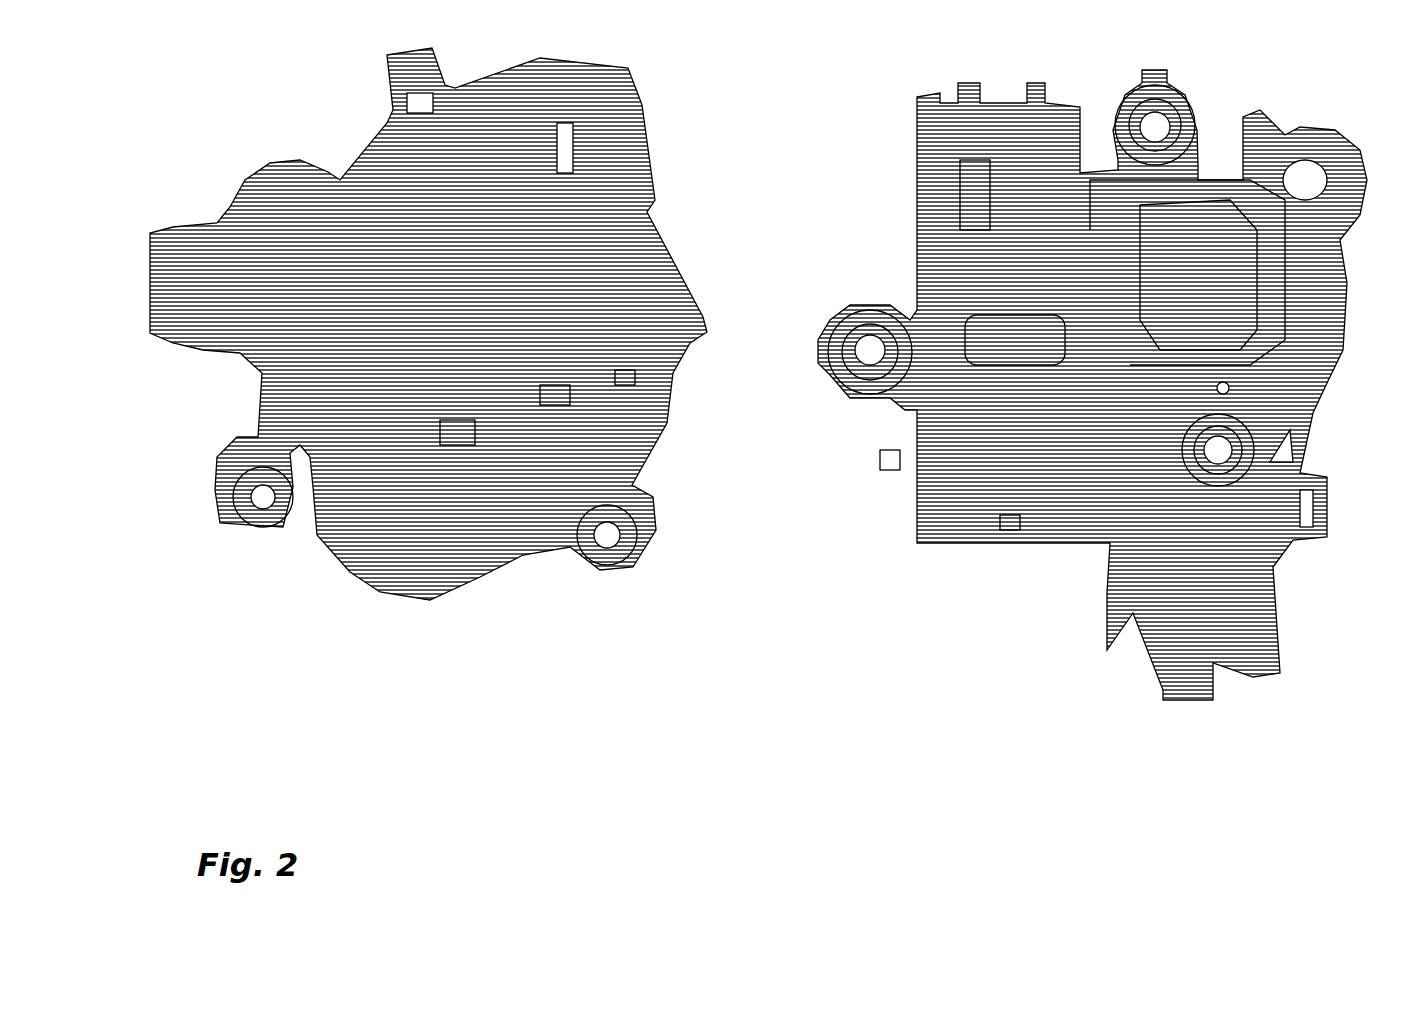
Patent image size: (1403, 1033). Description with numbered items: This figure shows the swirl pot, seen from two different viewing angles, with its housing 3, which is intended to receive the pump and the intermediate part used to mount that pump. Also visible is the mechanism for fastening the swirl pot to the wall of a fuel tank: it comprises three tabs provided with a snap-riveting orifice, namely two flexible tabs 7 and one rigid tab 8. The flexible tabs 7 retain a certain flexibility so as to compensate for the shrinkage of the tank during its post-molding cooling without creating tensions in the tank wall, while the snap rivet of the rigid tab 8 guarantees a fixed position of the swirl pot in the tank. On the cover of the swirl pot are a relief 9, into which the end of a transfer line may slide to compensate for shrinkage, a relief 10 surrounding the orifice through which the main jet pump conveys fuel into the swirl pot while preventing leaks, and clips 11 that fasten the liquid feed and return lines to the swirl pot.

The housing 3 is at (1162, 317).
The flexible tabs 7 is at (1120, 68).
The rigid tab 8 is at (1197, 460).
The relief 9 is at (458, 432).
The relief 10 is at (970, 363).
The clips 11 is at (1005, 522).